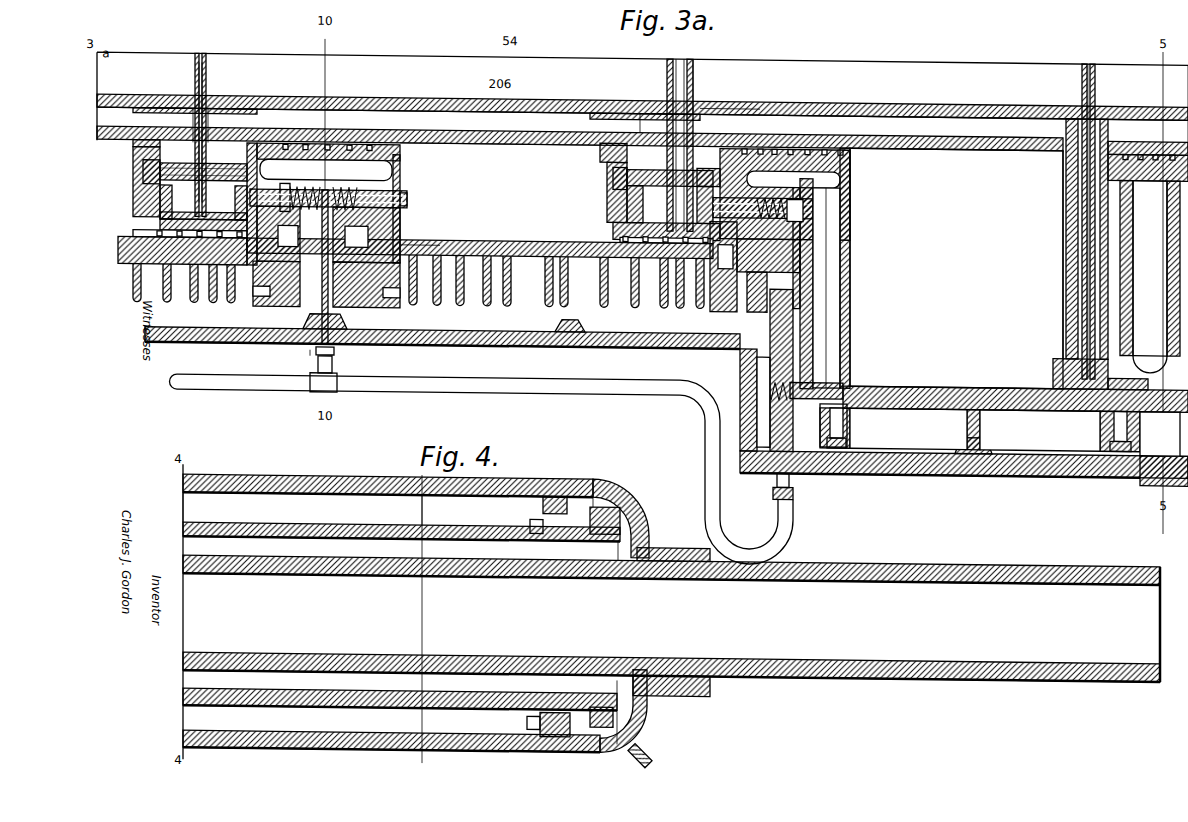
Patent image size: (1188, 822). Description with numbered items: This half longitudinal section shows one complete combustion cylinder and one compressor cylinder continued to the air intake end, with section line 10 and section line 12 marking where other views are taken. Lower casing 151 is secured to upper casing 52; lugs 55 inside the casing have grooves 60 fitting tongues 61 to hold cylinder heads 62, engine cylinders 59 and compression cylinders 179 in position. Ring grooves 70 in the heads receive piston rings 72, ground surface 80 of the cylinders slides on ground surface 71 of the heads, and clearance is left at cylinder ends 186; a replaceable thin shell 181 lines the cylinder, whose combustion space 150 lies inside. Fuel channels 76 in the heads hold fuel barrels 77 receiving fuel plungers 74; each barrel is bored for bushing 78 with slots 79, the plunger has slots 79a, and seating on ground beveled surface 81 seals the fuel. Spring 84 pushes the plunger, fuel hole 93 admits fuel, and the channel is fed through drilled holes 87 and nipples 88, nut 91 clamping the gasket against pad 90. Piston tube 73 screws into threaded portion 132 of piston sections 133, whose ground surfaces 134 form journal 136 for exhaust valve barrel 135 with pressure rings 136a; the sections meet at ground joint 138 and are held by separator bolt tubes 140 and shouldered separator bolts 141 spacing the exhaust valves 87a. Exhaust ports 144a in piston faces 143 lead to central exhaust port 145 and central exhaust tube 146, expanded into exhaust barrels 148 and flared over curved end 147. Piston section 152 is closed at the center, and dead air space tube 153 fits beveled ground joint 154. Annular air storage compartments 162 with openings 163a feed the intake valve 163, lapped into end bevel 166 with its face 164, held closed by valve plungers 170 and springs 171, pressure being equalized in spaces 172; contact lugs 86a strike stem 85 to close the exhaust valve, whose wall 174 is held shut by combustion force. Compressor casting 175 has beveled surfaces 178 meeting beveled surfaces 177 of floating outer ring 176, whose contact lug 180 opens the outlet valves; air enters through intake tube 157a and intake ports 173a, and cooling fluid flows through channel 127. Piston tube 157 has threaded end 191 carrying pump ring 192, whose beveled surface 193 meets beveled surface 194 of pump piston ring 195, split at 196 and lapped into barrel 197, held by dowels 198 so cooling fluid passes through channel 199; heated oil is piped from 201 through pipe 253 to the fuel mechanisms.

In FIG. 3A, the valve stem 10 is at (325, 191).
In FIG. 4, the section line 12— 12 is at (427, 757).
In FIG. 4, the upper casing 52 is at (350, 472).
In FIG. 3A, the lugs 55 is at (958, 436).
In FIG. 3A, the engine cylinders 59 is at (487, 270).
In FIG. 3A, the grooves 60 is at (995, 464).
In FIG. 3A, the tongues 61 is at (1150, 465).
In FIG. 3A, the cylinder heads 62 is at (800, 200).
In FIG. 3A, the ring grooves 70 is at (780, 138).
In FIG. 3A, the ground surface of cylinder heads 71 is at (775, 424).
In FIG. 3A, the piston rings 72 is at (1125, 141).
In FIG. 3A, the piston tube 73 is at (490, 138).
In FIG. 3A, the fuel plunger 74 is at (550, 188).
In FIG. 3A, the fuel channels 76 is at (580, 190).
In FIG. 3A, the fuel barrels 77 is at (328, 185).
In FIG. 3A, the bushing 78 is at (400, 192).
In FIG. 3A, the slots 79 is at (813, 208).
In FIG. 3A, the slots 79a is at (813, 190).
In FIG. 3A, the ground surface 80 is at (822, 420).
In FIG. 3A, the ground beveled surface 81 is at (365, 255).
In FIG. 3A, the spring 84 is at (800, 210).
In FIG. 3A, the stem 85 is at (440, 230).
In FIG. 3A, the contact lugs 86a is at (607, 213).
In FIG. 3A, the drilled holes 87 is at (272, 283).
In FIG. 3A, the exhaust valves 87a is at (710, 295).
In FIG. 3A, the nipples 88 is at (316, 355).
In FIG. 3A, the pad 90 is at (310, 346).
In FIG. 3A, the nut 91 is at (332, 355).
In FIG. 3A, the fuel hole 93 is at (805, 200).
In FIG. 3A, the channel 127 is at (1066, 270).
In FIG. 3A, the threaded portion 132 is at (600, 125).
In FIG. 3A, the piston sections 133 is at (735, 125).
In FIG. 3A, the ground surfaces 134 is at (607, 165).
In FIG. 3A, the exhaust valve barrel 135 is at (627, 180).
In FIG. 3A, the journal 136 is at (650, 106).
In FIG. 3A, the pressure rings 136a is at (600, 106).
In FIG. 3A, the ground joint 138 is at (667, 60).
In FIG. 3A, the separator bolt tubes 140 is at (627, 200).
In FIG. 3A, the shouldered separator bolts 141 is at (607, 190).
In FIG. 3A, the piston faces 143 is at (640, 240).
In FIG. 3A, the exhaust ports 144a is at (630, 253).
In FIG. 3A, the central exhaust port 145 is at (676, 110).
In FIG. 3A, the central exhaust tube 146 is at (412, 93).
In FIG. 3A, the curved end 147 is at (692, 100).
In FIG. 3A, the exhaust barrels 148 is at (610, 100).
In FIG. 3A, the combustion chamber 150 is at (940, 143).
In FIG. 3A, the lower casing 151 is at (455, 340).
In FIG. 4, the lower casing 151 is at (283, 740).
In FIG. 3A, the piston section 152 is at (693, 64).
In FIG. 3A, the compressor dead air space tube 153 is at (642, 132).
In FIG. 4, the compressor dead air space tube 153 is at (671, 642).
In FIG. 3A, the beveled ground joint 154 is at (720, 100).
In FIG. 3A, the piston tube 157 is at (1173, 109).
In FIG. 4, the piston tube 157 is at (383, 520).
In FIG. 4, the intake tube 157a is at (455, 575).
In FIG. 3A, the annular air storage compartments 162 is at (1110, 426).
In FIG. 3A, the intake valve 163 is at (1068, 360).
In FIG. 3A, the intake and outlet openings 163a is at (860, 408).
In FIG. 3A, the valve face 164 is at (845, 372).
In FIG. 3A, the end bevel 166 is at (768, 269).
In FIG. 3A, the valve plungers 170 is at (757, 399).
In FIG. 3A, the springs 171 is at (757, 369).
In FIG. 3A, the equalizing spaces 172 is at (858, 341).
In FIG. 3A, the intake ports 173a is at (1095, 81).
In FIG. 3A, the wall 174 is at (413, 174).
In FIG. 3A, the compressor casting 175 is at (1066, 205).
In FIG. 3A, the outer ring 176 is at (1050, 360).
In FIG. 3A, the beveled surfaces 177 is at (1060, 340).
In FIG. 3A, the beveled surfaces 178 is at (1063, 345).
In FIG. 3A, the compression cylinders 179 is at (920, 376).
In FIG. 3A, the contact lug 180 is at (1055, 370).
In FIG. 3A, the thin cylindrical shell 181 is at (125, 255).
In FIG. 3A, the cylinder ends 186 is at (829, 268).
In FIG. 4, the end of piston tube 191 is at (645, 505).
In FIG. 4, the pump ring 192 is at (605, 500).
In FIG. 4, the beveled surface 193 is at (560, 490).
In FIG. 4, the beveled surface 194 is at (560, 540).
In FIG. 4, the pump piston ring 195 is at (550, 745).
In FIG. 4, the split 196 is at (520, 470).
In FIG. 4, the barrel 197 is at (439, 510).
In FIG. 4, the dowels 198 is at (527, 718).
In FIG. 4, the channel 199 is at (226, 507).
In FIG. 4, the heated fluid outlet 201 is at (655, 738).
In FIG. 3A, the pipe 253 is at (410, 387).